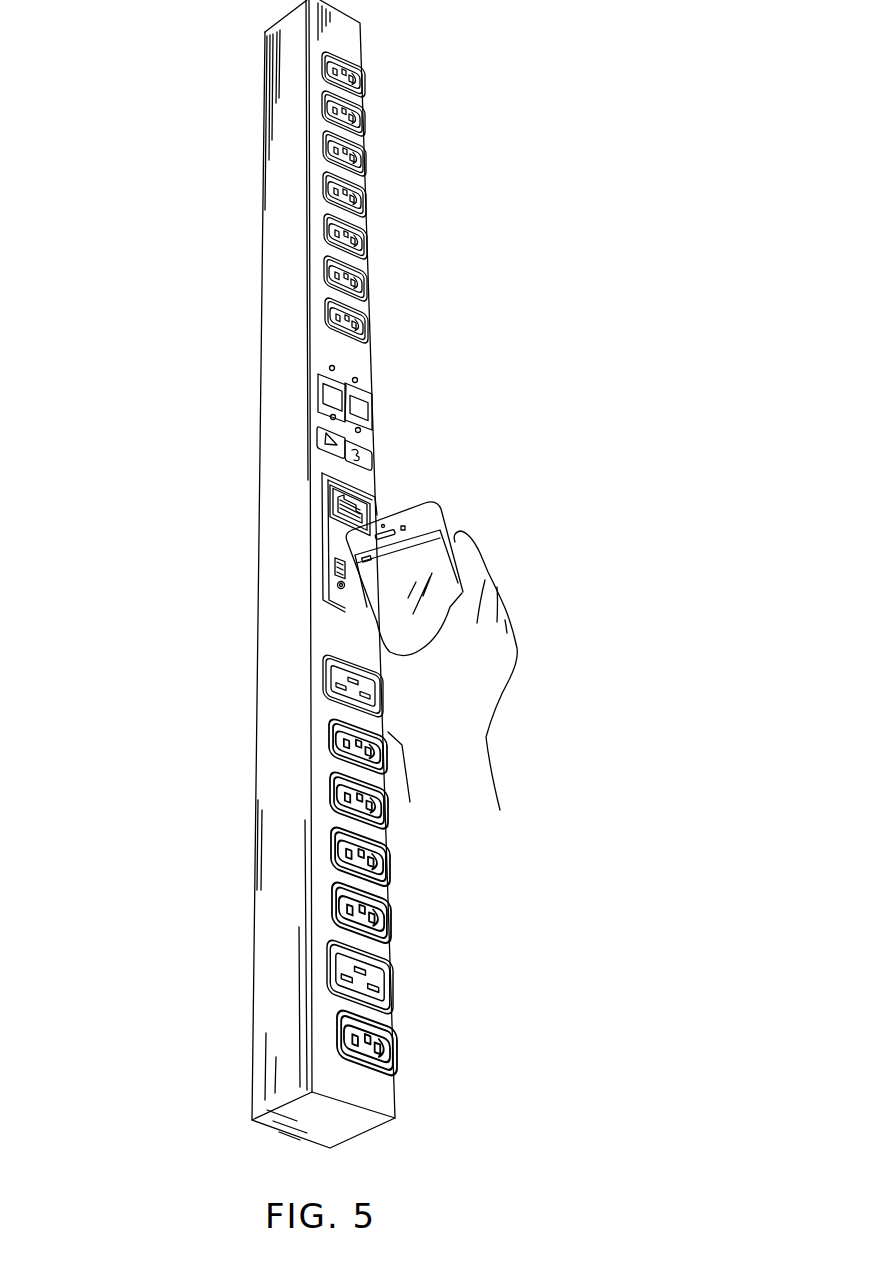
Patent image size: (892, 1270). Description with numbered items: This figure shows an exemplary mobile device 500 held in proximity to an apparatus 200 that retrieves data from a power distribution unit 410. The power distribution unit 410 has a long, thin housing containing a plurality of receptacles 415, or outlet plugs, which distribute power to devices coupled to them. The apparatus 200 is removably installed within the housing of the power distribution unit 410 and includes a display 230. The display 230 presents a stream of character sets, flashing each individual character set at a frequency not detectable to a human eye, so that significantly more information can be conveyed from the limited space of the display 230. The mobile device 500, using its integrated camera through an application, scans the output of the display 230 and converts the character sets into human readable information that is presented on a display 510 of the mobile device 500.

The power distribution unit 410 is at (360, 42).
The receptacle 415 is at (367, 207).
The apparatus to retrieve data from a power distribution unit 200 is at (215, 575).
The display 230 is at (337, 570).
The mobile device 500 is at (487, 521).
The display of the mobile device 510 is at (437, 563).